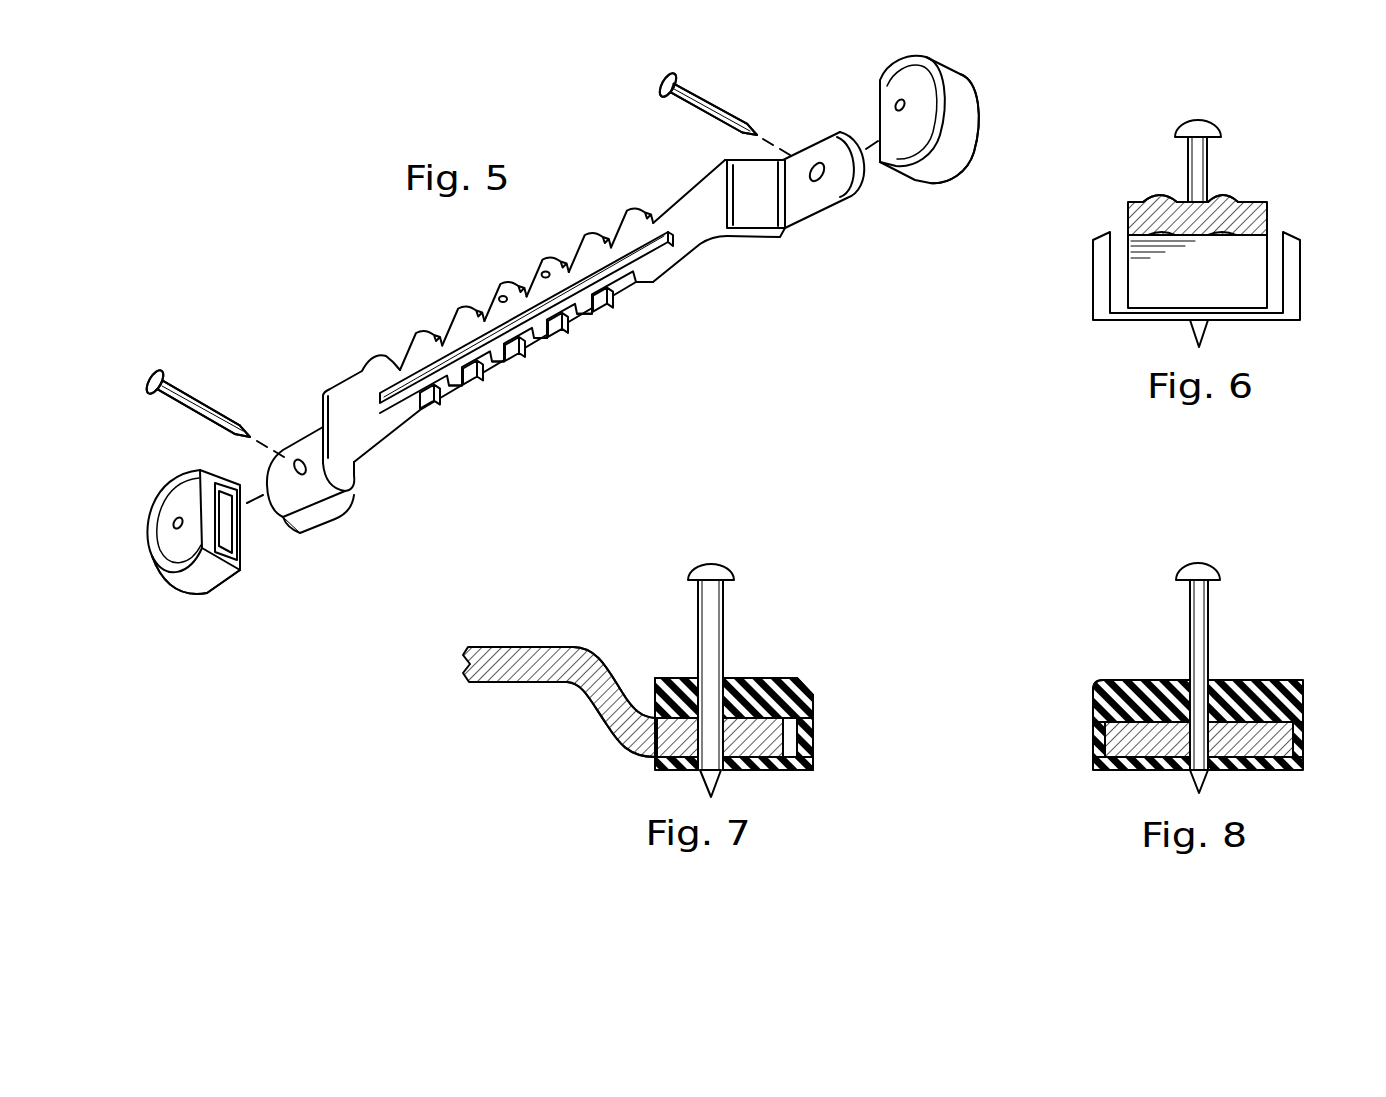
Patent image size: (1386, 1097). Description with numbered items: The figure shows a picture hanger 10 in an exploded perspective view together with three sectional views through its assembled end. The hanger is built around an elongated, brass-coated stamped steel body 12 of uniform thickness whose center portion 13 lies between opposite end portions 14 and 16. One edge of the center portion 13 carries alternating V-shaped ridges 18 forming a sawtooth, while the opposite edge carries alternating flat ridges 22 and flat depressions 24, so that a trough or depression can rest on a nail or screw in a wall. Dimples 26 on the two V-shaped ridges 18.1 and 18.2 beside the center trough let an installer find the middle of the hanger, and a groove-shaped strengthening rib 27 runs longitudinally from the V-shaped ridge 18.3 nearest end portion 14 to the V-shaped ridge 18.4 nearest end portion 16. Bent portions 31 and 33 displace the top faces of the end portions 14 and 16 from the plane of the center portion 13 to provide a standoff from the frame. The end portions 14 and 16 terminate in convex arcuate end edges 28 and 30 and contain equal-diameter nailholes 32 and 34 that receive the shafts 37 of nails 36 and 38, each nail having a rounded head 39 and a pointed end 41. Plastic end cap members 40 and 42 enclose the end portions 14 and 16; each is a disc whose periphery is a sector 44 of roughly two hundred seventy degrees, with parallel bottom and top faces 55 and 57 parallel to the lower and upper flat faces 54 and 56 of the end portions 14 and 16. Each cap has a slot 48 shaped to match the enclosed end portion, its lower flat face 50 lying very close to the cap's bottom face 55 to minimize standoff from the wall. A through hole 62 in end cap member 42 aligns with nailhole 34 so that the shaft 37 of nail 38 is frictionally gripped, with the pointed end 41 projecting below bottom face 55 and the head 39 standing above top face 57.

In FIG. 5, the picture hanger 10 is at (365, 260).
In FIG. 5, the body 12 is at (360, 357).
In FIG. 5, the center portion 13 is at (689, 208).
In FIG. 6, the center portion 13 is at (1262, 213).
In FIG. 7, the center portion 13 is at (520, 647).
In FIG. 5, the end portion 14 is at (330, 497).
In FIG. 5, the end portion 16 is at (820, 195).
In FIG. 7, the end portion 16 is at (770, 750).
In FIG. 8, the end portion 16 is at (1292, 760).
In FIG. 5, the V-shaped ridges 18 is at (456, 312).
In FIG. 5, the V-shaped ridge 18.1 is at (503, 285).
In FIG. 5, the V-shaped ridge 18.2 is at (546, 262).
In FIG. 5, the V-shaped ridge 18.3 is at (414, 334).
In FIG. 5, the V-shaped ridge 18.4 is at (648, 211).
In FIG. 5, the flat ridges 22 is at (610, 300).
In FIG. 5, the flat depressions 24 is at (643, 281).
In FIG. 5, the dimples 26 is at (497, 294).
In FIG. 6, the dimples 26 is at (1155, 193).
In FIG. 5, the strengthening rib 27 is at (670, 238).
In FIG. 6, the strengthening rib 27 is at (1228, 192).
In FIG. 5, the end edge 28 is at (293, 529).
In FIG. 5, the end edge 30 is at (860, 176).
In FIG. 7, the end edge 30 is at (790, 735).
In FIG. 5, the bent portion 31 is at (350, 477).
In FIG. 5, the nailhole 32 is at (300, 458).
In FIG. 5, the bent portion 33 is at (758, 238).
In FIG. 6, the bent portion 33 is at (1262, 277).
In FIG. 7, the bent portion 33 is at (600, 716).
In FIG. 5, the nailhole 34 is at (816, 163).
In FIG. 7, the nailhole 34 is at (697, 737).
In FIG. 8, the nailhole 34 is at (1127, 680).
In FIG. 5, the nail 36 is at (188, 396).
In FIG. 5, the shaft 37 is at (688, 104).
In FIG. 6, the shaft 37 is at (1210, 150).
In FIG. 7, the shaft 37 is at (700, 598).
In FIG. 8, the shaft 37 is at (1210, 615).
In FIG. 5, the nail 38 is at (708, 97).
In FIG. 6, the nail 38 is at (1180, 152).
In FIG. 7, the nail 38 is at (730, 602).
In FIG. 8, the nail 38 is at (1172, 612).
In FIG. 5, the rounded head 39 is at (661, 78).
In FIG. 6, the rounded head 39 is at (1200, 121).
In FIG. 7, the rounded head 39 is at (716, 564).
In FIG. 8, the rounded head 39 is at (1204, 562).
In FIG. 5, the end cap member 40 is at (205, 596).
In FIG. 5, the pointed end 41 is at (758, 136).
In FIG. 6, the pointed end 41 is at (1204, 330).
In FIG. 7, the pointed end 41 is at (718, 782).
In FIG. 8, the pointed end 41 is at (1206, 778).
In FIG. 5, the end cap member 42 is at (932, 156).
In FIG. 6, the end cap member 42 is at (1082, 270).
In FIG. 7, the end cap member 42 is at (762, 678).
In FIG. 8, the end cap member 42 is at (1275, 680).
In FIG. 5, the sector 44 is at (955, 128).
In FIG. 7, the sector 44 is at (814, 705).
In FIG. 5, the slot 48 is at (228, 537).
In FIG. 7, the slot 48 is at (798, 679).
In FIG. 8, the slot 48 is at (1120, 736).
In FIG. 5, the lower flat face 50 is at (243, 540).
In FIG. 7, the lower flat face 50 is at (786, 757).
In FIG. 8, the lower flat face 50 is at (1268, 758).
In FIG. 7, the lower flat face 54 is at (680, 760).
In FIG. 8, the lower flat face 54 is at (1150, 760).
In FIG. 7, the bottom face 55 is at (758, 772).
In FIG. 8, the bottom face 55 is at (1108, 770).
In FIG. 7, the upper flat face 56 is at (663, 678).
In FIG. 8, the upper flat face 56 is at (1096, 688).
In FIG. 5, the top face 57 is at (898, 72).
In FIG. 7, the top face 57 is at (730, 677).
In FIG. 8, the top face 57 is at (1238, 680).
In FIG. 7, the through hole 62 is at (690, 677).
In FIG. 8, the through hole 62 is at (1176, 680).